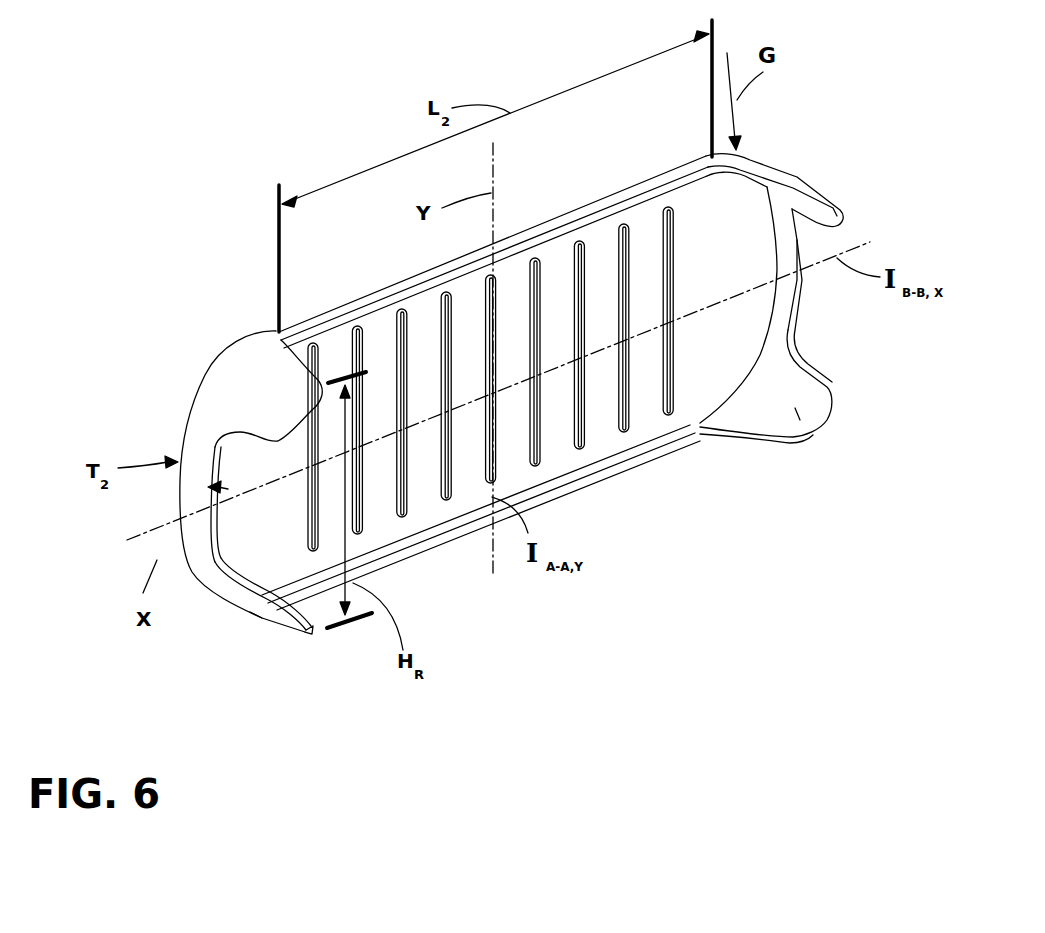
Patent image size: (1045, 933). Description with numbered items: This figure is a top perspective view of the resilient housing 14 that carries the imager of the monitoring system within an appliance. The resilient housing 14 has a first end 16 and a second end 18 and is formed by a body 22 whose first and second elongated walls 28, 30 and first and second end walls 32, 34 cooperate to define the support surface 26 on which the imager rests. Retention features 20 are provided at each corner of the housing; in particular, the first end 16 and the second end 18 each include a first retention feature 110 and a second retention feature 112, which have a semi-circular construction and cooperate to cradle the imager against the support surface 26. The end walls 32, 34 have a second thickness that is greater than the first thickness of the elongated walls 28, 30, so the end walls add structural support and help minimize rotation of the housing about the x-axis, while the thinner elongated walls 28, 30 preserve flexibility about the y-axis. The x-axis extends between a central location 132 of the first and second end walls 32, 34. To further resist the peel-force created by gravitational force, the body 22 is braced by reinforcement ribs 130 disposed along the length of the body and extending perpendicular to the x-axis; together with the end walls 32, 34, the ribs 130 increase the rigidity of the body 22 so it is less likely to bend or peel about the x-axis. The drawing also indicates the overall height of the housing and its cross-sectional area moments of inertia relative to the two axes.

The resilient housing 14 is at (268, 325).
The first end 16 is at (210, 583).
The second end 18 is at (797, 213).
The retention features 20 is at (297, 633).
The body 22 is at (425, 513).
The support surface 26 is at (707, 232).
The first elongated wall 28 is at (520, 240).
The second elongated wall 30 is at (613, 470).
The first end wall 32 is at (172, 497).
The second end wall 34 is at (800, 283).
The first retention feature 110 is at (270, 413).
The second retention feature 112 is at (250, 610).
The reinforcement ribs 130 is at (582, 285).
The central location 132 is at (800, 307).